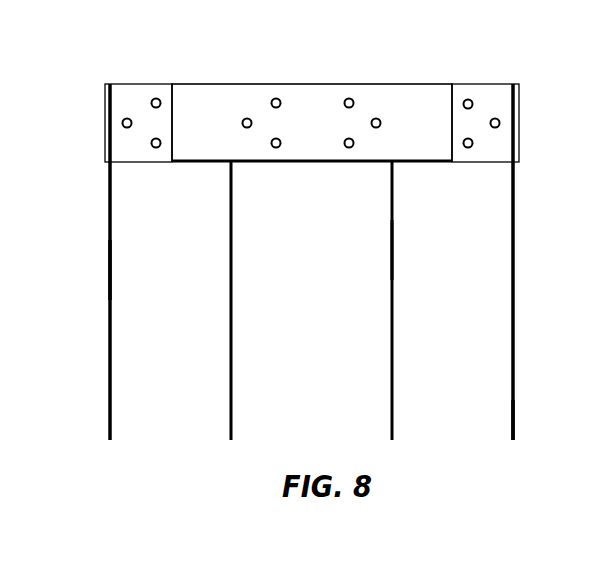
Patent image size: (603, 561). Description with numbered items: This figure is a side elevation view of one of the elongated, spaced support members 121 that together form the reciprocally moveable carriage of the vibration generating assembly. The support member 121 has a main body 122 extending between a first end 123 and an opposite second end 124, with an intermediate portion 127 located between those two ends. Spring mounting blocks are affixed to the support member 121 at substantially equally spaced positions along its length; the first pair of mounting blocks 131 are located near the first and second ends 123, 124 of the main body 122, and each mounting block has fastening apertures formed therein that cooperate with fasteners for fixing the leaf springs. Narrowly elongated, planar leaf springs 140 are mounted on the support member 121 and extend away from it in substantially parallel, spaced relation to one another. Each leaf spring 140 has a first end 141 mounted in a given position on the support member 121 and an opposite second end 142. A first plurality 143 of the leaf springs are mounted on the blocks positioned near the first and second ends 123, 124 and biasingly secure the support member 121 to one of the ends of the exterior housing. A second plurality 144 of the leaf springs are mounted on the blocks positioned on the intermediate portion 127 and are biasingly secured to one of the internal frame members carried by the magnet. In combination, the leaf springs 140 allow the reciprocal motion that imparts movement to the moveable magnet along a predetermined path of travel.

The support member 121 is at (421, 98).
The main body 122 is at (307, 100).
The first end 123 is at (107, 82).
The second end 124 is at (517, 85).
The intermediate portion 127 is at (312, 148).
The first pair of mounting blocks 131 is at (137, 92).
The planar leaf spring 140 is at (112, 260).
The first end 141 is at (521, 128).
The second end 142 is at (513, 440).
The first plurality of leaf springs 143 is at (108, 231).
The second plurality of leaf springs 144 is at (233, 310).